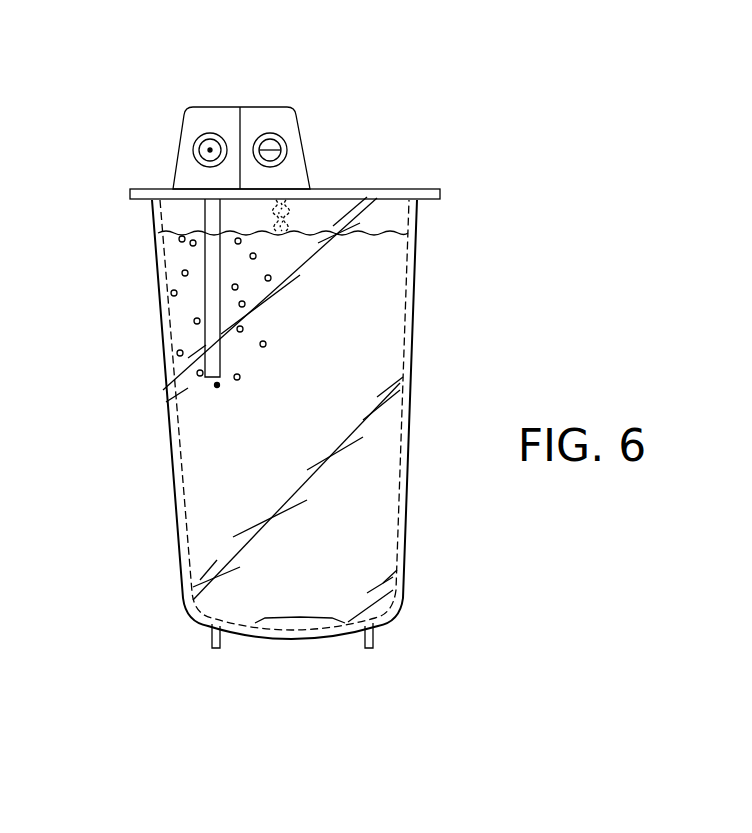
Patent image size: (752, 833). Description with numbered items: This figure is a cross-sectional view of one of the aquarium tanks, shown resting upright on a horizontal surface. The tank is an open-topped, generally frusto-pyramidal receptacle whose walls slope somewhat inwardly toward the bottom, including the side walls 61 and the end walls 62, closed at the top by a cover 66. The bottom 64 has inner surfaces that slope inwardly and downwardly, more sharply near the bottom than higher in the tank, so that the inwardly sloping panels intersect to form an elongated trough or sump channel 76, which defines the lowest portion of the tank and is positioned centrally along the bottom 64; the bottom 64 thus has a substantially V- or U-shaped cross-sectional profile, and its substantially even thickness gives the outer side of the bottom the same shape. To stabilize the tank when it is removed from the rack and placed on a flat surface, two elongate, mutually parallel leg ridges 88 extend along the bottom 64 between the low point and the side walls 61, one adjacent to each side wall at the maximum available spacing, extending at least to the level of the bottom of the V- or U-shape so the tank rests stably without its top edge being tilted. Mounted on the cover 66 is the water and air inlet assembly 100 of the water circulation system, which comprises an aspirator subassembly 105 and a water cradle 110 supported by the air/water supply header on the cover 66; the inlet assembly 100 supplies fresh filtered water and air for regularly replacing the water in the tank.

The water and air inlet assembly 100 is at (226, 108).
The aspirator subassembly 105 is at (196, 137).
The water cradle 110 is at (281, 137).
The cover 66 is at (375, 188).
The side walls 61 is at (163, 342).
The end walls 62 is at (214, 558).
The sump channel 76 is at (300, 617).
The bottom 64 is at (288, 643).
The leg ridges 88 is at (215, 650).